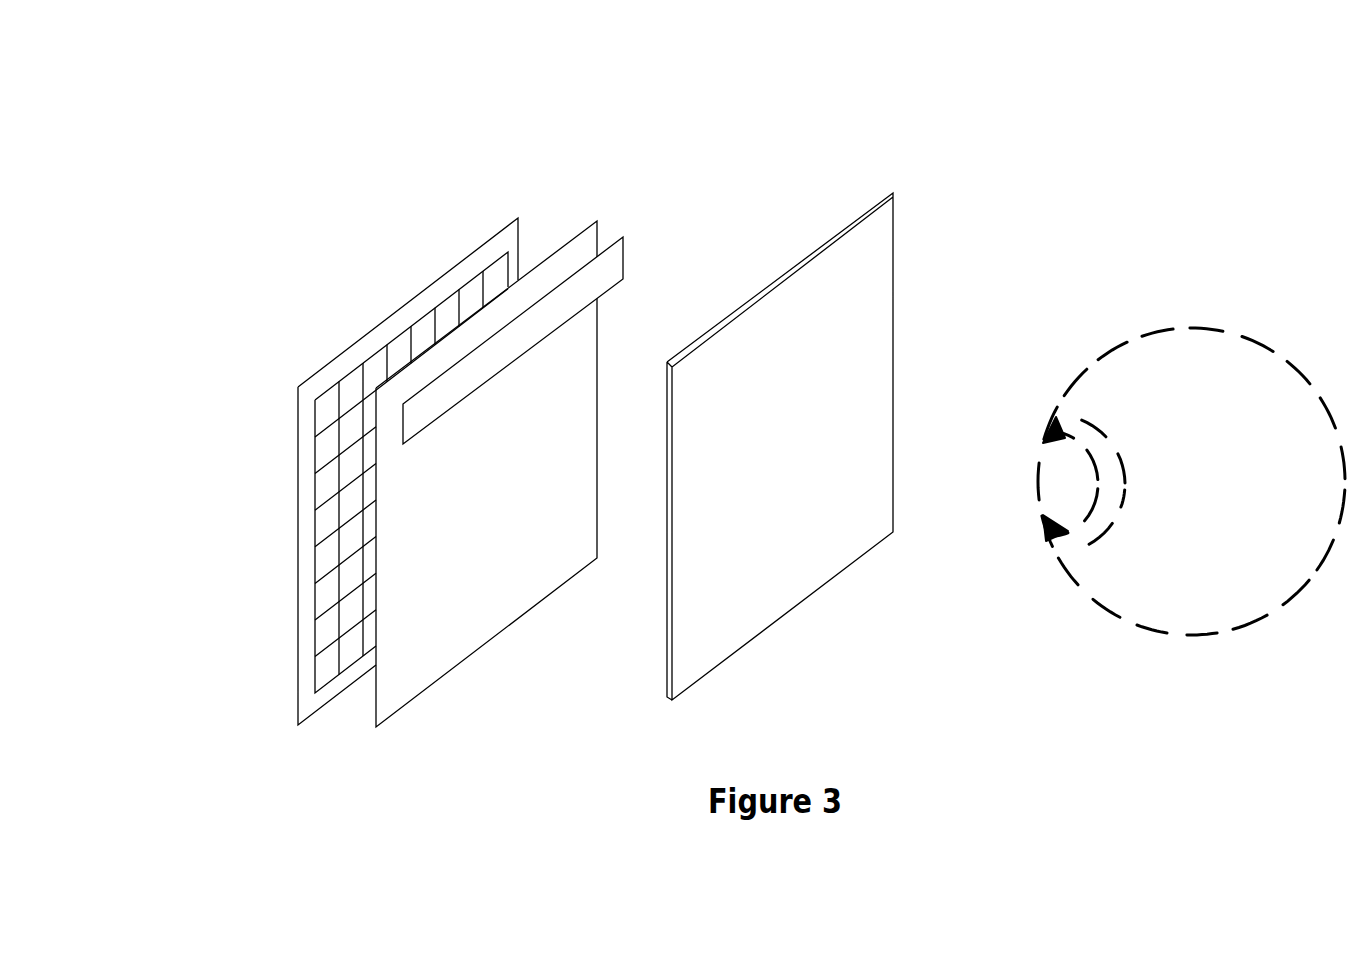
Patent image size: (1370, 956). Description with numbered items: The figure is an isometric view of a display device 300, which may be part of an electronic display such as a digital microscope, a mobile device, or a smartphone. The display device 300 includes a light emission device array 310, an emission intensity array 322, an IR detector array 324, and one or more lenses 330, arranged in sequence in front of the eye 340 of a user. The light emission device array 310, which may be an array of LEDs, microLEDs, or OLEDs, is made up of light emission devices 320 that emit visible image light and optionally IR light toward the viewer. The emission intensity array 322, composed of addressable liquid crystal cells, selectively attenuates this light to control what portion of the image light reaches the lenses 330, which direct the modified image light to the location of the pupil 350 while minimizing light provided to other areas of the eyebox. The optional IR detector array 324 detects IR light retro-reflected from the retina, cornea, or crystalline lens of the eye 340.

The display device 300 is at (292, 108).
The light emission device array 310 is at (297, 528).
The light emission devices 320 is at (418, 310).
The emission intensity array 322 is at (585, 223).
The IR detector array 324 is at (614, 247).
The lenses 330 is at (827, 238).
The eye 340 is at (1190, 327).
The pupil 350 is at (1067, 505).